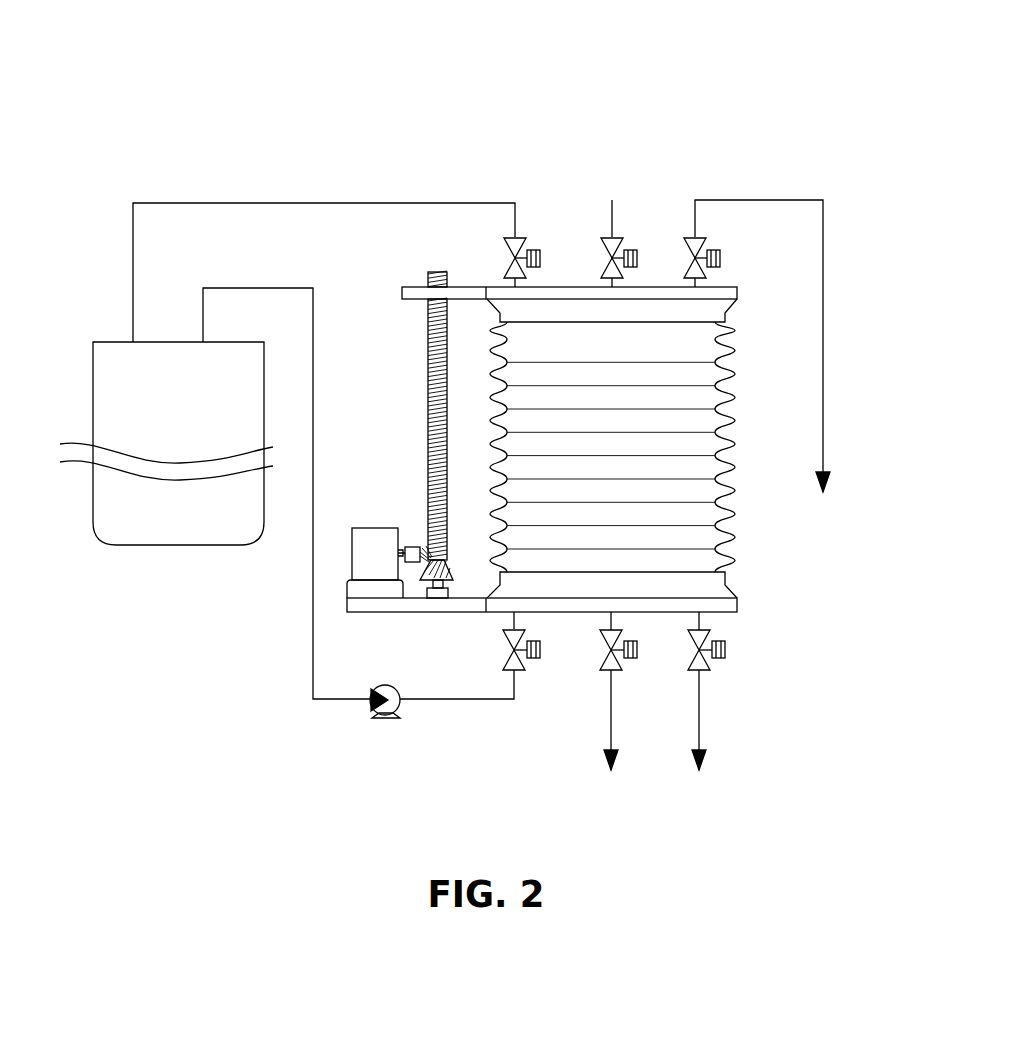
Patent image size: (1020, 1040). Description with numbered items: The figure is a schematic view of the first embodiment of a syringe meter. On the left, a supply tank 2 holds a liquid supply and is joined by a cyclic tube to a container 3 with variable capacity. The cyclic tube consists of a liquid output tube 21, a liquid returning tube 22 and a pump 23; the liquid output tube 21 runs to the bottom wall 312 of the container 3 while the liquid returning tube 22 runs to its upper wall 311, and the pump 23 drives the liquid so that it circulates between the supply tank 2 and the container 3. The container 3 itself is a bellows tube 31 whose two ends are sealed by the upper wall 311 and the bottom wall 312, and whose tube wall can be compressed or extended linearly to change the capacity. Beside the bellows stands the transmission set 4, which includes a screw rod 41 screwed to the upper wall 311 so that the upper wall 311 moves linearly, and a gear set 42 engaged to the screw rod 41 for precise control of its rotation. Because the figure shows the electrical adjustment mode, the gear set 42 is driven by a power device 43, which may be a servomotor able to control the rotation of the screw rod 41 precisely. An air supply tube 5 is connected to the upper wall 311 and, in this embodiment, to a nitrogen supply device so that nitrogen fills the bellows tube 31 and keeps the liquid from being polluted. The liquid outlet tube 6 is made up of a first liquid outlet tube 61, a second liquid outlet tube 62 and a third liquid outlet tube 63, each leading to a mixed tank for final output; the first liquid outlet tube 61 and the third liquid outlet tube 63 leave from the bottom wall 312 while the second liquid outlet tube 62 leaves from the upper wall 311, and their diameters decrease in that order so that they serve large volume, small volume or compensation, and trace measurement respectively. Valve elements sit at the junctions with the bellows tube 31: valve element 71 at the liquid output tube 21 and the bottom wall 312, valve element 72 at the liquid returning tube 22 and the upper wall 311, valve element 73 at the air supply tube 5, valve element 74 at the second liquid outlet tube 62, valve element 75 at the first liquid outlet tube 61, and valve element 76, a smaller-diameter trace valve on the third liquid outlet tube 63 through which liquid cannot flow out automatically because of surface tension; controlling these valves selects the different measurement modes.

The supply tank 2 is at (180, 507).
The liquid output tube 21 is at (455, 699).
The liquid returning tube 22 is at (410, 203).
The pump 23 is at (385, 705).
The container with variable capacity 3 is at (595, 434).
The bellows tube 31 is at (640, 401).
The upper wall 311 is at (710, 293).
The bottom wall 312 is at (712, 604).
The transmission set 4 is at (384, 434).
The screw rod 41 is at (431, 398).
The gear set 42 is at (421, 558).
The power device 43 is at (370, 542).
The air supply tube 5 is at (612, 218).
The liquid outlet tube 6 is at (703, 762).
The first liquid outlet tube 61 is at (613, 710).
The second liquid outlet tube 62 is at (750, 200).
The third liquid outlet tube 63 is at (740, 720).
The valve element 71 is at (507, 634).
The valve element 72 is at (505, 276).
The valve element 73 is at (607, 270).
The valve element 74 is at (695, 235).
The valve element 75 is at (610, 662).
The trace valve 76 is at (693, 662).